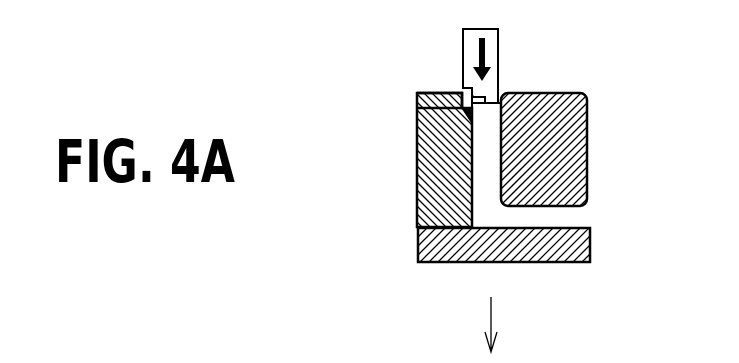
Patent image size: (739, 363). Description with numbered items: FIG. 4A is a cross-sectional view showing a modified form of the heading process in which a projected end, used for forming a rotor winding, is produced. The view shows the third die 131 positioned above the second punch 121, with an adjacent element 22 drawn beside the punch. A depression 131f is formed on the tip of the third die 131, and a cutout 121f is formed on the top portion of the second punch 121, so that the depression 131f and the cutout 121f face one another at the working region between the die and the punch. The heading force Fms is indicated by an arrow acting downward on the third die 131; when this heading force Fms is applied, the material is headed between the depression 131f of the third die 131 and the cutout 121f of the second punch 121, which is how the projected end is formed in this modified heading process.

The second punch 121 is at (427, 156).
The cutout 121f is at (470, 113).
The movable member 22 is at (582, 130).
The third die 131 is at (464, 45).
The depression 131f is at (487, 97).
The heading force Fms is at (490, 48).